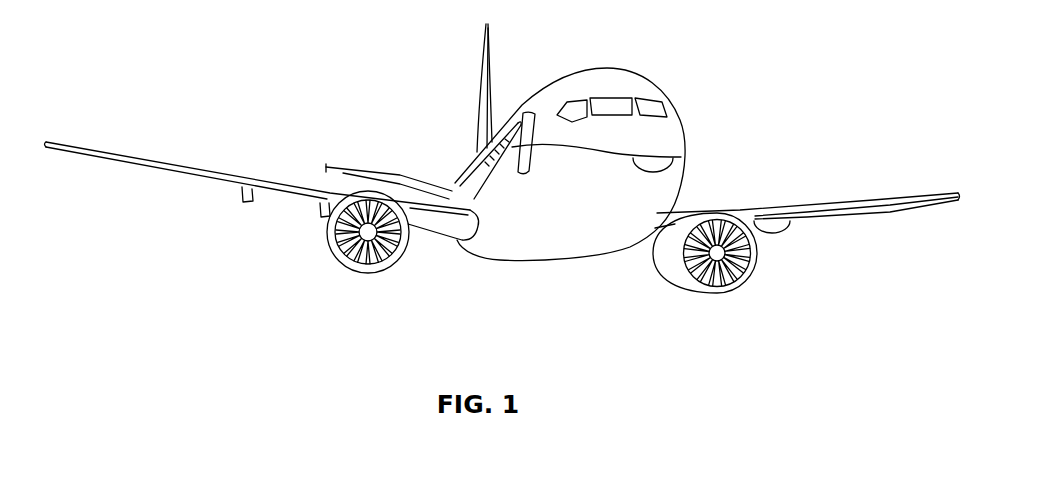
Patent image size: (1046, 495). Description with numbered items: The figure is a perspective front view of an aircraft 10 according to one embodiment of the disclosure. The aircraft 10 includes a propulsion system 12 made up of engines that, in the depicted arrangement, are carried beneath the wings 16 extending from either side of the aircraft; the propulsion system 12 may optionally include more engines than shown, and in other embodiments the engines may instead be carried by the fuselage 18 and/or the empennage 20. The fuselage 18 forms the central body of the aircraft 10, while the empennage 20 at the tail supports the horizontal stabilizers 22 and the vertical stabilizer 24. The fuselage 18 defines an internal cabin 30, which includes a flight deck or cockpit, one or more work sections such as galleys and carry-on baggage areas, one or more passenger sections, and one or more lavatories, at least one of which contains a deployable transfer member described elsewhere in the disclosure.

The aircraft 10 is at (274, 37).
The propulsion system 12 is at (283, 270).
The wings 16 is at (167, 160).
The fuselage 18 is at (685, 128).
The empennage 20 is at (473, 155).
The horizontal stabilizers 22 is at (357, 167).
The vertical stabilizer 24 is at (483, 66).
The internal cabin 30 is at (612, 100).